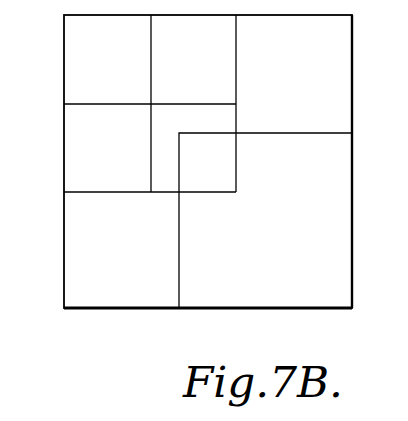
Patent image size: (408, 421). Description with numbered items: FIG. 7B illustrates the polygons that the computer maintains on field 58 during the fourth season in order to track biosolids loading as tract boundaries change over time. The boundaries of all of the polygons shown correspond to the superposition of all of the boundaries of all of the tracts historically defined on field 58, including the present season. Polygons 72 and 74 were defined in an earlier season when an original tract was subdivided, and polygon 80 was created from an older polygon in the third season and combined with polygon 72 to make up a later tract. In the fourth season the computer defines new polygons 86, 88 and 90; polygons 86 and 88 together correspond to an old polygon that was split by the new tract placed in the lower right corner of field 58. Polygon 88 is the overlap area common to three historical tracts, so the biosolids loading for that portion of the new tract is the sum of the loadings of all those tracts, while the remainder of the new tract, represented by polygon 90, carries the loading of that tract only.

The field 58 is at (148, 279).
The polygon 72 is at (78, 48).
The polygon 74 is at (78, 131).
The polygon 80 is at (221, 67).
The polygon 86 is at (227, 120).
The polygon 88 is at (199, 152).
The polygon 90 is at (246, 290).